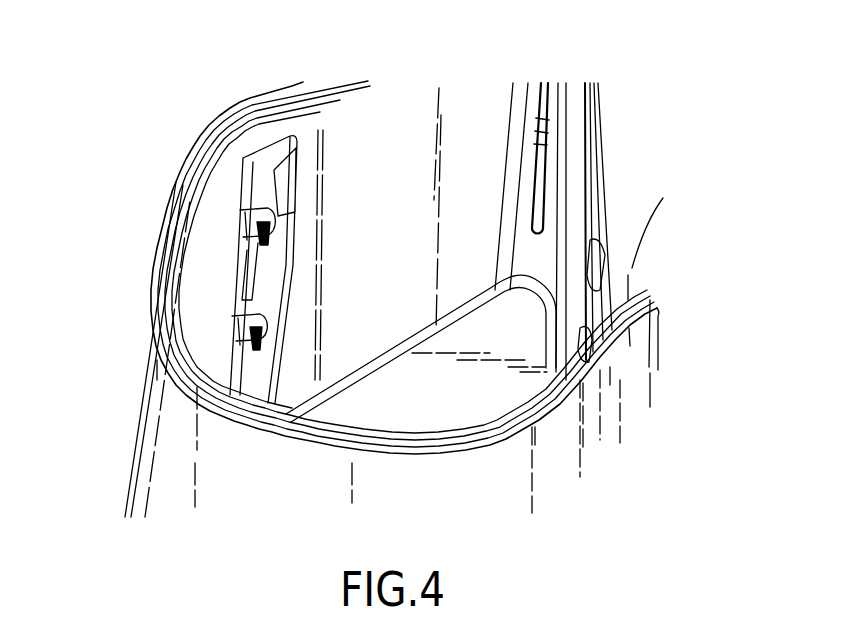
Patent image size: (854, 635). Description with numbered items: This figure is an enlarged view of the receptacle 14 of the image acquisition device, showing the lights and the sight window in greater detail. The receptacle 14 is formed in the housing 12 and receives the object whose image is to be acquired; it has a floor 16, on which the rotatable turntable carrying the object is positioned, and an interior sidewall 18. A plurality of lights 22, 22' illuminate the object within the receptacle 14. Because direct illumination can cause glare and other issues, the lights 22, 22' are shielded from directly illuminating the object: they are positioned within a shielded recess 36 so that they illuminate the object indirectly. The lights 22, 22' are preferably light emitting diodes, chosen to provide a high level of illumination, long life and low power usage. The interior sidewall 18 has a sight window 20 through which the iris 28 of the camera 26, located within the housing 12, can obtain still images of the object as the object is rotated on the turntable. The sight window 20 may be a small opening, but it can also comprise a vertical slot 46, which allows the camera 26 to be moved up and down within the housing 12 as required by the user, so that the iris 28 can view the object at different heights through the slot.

The housing 12 is at (163, 439).
The receptacle 14 is at (355, 168).
The floor 16 is at (470, 395).
The interior sidewall 18 is at (360, 131).
The sight window 20 is at (542, 163).
The light 22 is at (196, 214).
The light 22' is at (181, 339).
The camera 26 is at (557, 120).
The iris 28 is at (543, 132).
The shielded recess 36 is at (253, 255).
The vertical slot 46 is at (532, 177).